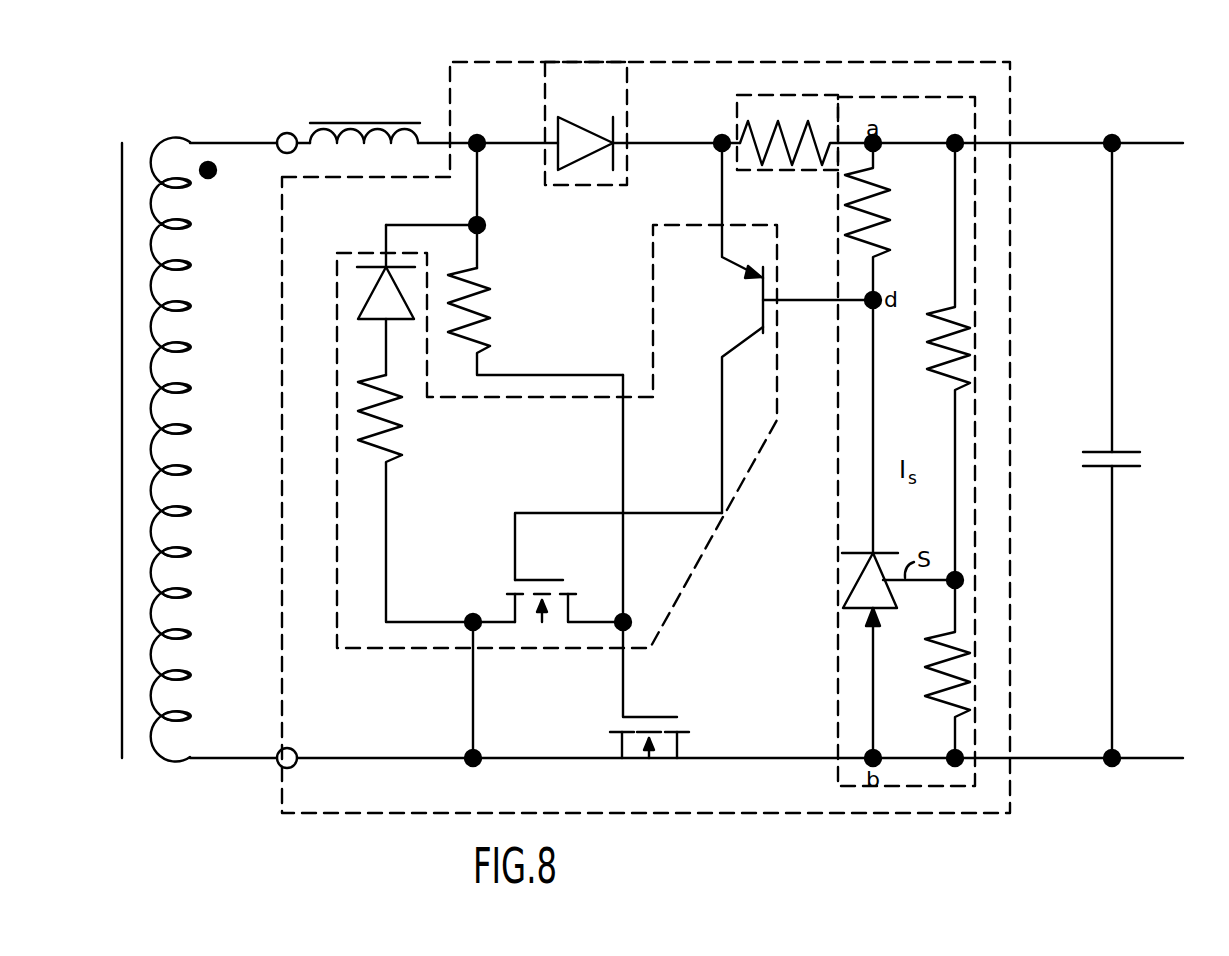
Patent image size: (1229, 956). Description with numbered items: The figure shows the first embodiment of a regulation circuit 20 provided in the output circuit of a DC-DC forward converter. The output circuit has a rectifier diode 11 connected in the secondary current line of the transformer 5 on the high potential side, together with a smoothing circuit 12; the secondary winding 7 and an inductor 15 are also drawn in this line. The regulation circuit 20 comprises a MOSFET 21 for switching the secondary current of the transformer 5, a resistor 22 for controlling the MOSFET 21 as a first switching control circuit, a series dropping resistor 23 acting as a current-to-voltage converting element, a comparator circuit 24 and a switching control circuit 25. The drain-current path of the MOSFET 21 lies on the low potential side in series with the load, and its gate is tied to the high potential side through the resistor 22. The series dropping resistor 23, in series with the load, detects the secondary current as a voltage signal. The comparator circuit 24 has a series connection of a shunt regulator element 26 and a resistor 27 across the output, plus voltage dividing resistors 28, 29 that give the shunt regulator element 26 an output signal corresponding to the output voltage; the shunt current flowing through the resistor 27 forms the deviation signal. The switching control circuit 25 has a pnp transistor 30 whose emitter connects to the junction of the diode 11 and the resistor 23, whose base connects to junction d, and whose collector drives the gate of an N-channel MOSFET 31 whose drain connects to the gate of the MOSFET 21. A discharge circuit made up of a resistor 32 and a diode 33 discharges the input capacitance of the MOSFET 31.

The transformer 5 is at (126, 147).
The secondary winding 7 is at (182, 453).
The rectifier diode 11 is at (570, 117).
The smoothing circuit 12 is at (1138, 458).
The inductor 15 is at (345, 122).
The regulation circuit 20 is at (675, 62).
The MOSFET 21 is at (672, 722).
The resistor 22 is at (467, 310).
The series dropping resistor 23 is at (787, 95).
The comparator circuit 24 is at (925, 97).
The switching control circuit 25 is at (710, 328).
The shunt regulator element 26 is at (850, 586).
The resistor 27 is at (872, 218).
The voltage dividing resistor 28 is at (943, 347).
The voltage dividing resistor 29 is at (947, 690).
The pnp transistor 30 is at (760, 304).
The N-channel MOSFET 31 is at (563, 592).
The resistor 32 is at (388, 436).
The diode 33 is at (363, 310).